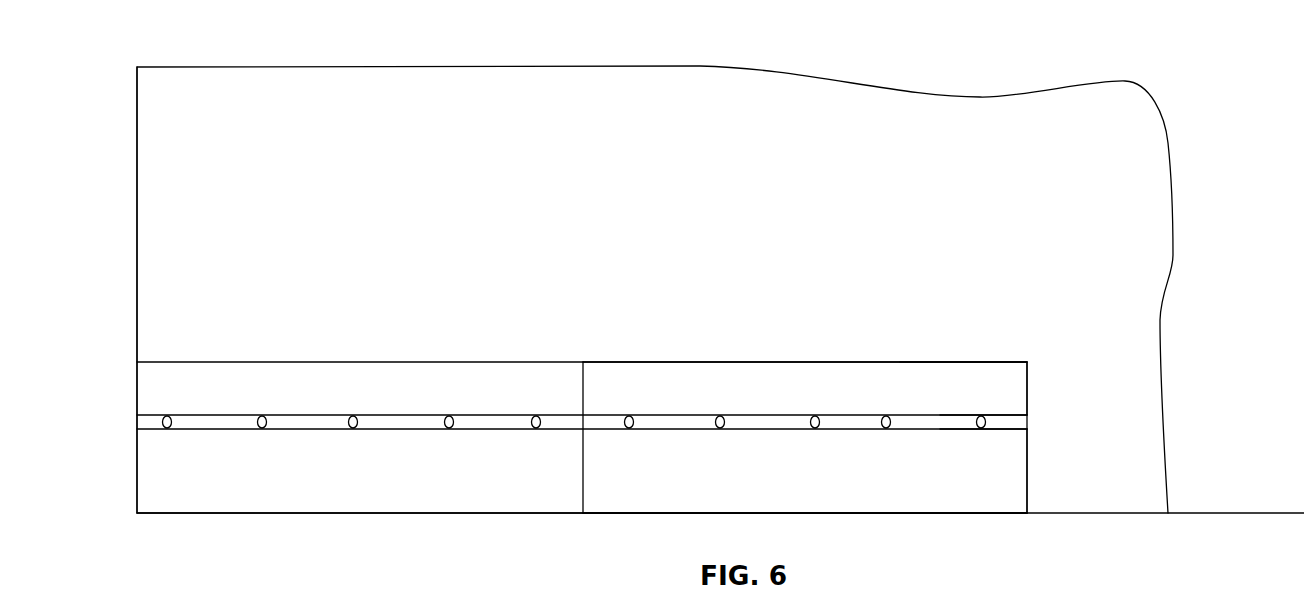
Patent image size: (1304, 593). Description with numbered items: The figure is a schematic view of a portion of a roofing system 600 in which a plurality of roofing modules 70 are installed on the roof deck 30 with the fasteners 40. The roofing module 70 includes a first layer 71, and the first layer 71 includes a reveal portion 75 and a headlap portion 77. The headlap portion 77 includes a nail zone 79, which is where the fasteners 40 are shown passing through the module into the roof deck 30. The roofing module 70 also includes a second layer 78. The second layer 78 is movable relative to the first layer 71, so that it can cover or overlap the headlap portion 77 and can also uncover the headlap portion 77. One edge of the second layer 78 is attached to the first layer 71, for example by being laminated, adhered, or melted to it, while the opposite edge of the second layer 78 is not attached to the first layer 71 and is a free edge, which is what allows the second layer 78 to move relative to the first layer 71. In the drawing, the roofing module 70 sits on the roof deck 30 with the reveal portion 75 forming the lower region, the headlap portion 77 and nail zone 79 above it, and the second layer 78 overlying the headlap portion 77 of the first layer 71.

The roofing system 600 is at (813, 187).
The roof deck 30 is at (340, 244).
The roofing module 70 is at (157, 402).
The fasteners 40 is at (357, 417).
The headlap portion 77 is at (637, 405).
The second layer 78 is at (963, 410).
The nail zone 79 is at (1015, 420).
The first layer 71 is at (977, 472).
The reveal portion 75 is at (810, 492).